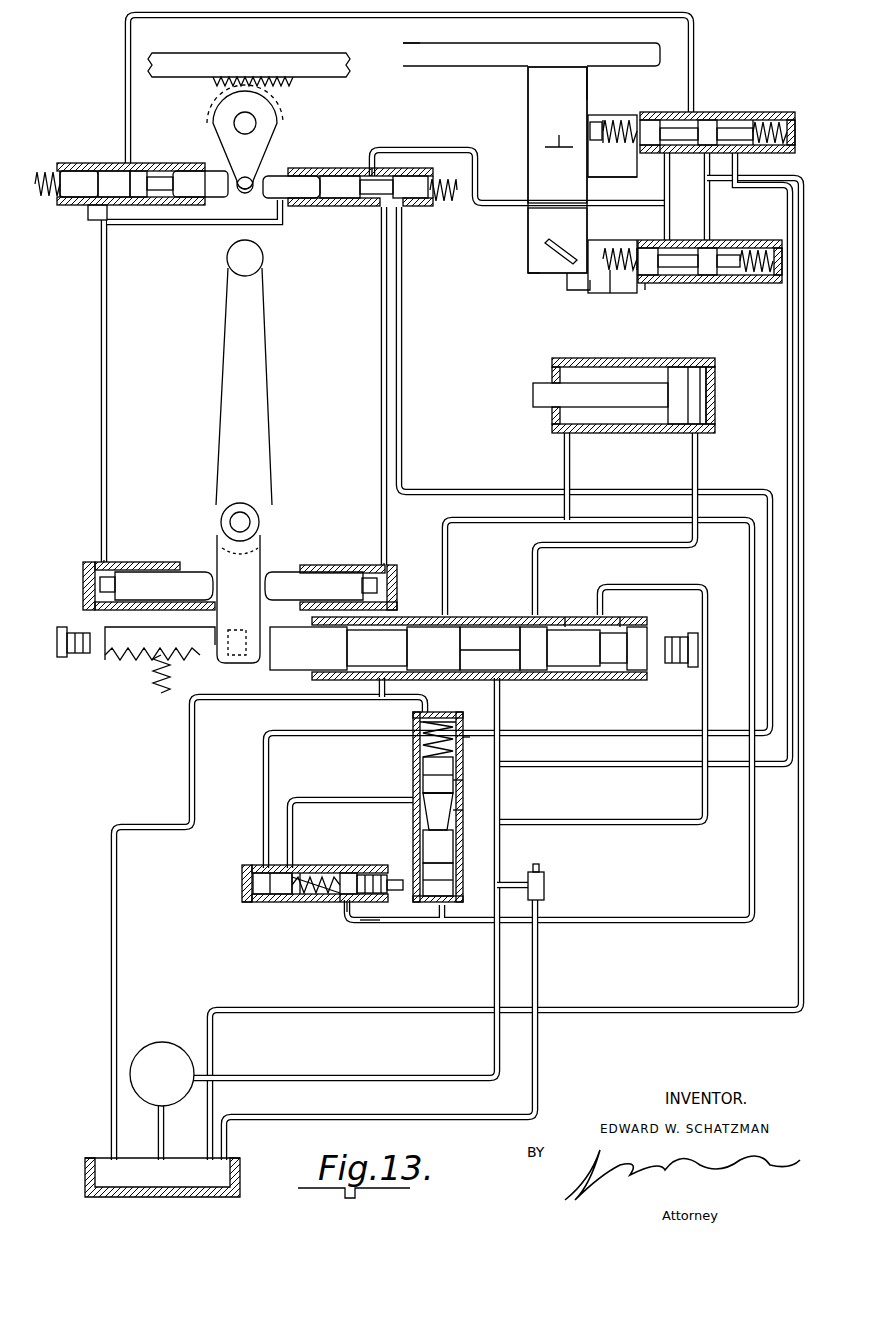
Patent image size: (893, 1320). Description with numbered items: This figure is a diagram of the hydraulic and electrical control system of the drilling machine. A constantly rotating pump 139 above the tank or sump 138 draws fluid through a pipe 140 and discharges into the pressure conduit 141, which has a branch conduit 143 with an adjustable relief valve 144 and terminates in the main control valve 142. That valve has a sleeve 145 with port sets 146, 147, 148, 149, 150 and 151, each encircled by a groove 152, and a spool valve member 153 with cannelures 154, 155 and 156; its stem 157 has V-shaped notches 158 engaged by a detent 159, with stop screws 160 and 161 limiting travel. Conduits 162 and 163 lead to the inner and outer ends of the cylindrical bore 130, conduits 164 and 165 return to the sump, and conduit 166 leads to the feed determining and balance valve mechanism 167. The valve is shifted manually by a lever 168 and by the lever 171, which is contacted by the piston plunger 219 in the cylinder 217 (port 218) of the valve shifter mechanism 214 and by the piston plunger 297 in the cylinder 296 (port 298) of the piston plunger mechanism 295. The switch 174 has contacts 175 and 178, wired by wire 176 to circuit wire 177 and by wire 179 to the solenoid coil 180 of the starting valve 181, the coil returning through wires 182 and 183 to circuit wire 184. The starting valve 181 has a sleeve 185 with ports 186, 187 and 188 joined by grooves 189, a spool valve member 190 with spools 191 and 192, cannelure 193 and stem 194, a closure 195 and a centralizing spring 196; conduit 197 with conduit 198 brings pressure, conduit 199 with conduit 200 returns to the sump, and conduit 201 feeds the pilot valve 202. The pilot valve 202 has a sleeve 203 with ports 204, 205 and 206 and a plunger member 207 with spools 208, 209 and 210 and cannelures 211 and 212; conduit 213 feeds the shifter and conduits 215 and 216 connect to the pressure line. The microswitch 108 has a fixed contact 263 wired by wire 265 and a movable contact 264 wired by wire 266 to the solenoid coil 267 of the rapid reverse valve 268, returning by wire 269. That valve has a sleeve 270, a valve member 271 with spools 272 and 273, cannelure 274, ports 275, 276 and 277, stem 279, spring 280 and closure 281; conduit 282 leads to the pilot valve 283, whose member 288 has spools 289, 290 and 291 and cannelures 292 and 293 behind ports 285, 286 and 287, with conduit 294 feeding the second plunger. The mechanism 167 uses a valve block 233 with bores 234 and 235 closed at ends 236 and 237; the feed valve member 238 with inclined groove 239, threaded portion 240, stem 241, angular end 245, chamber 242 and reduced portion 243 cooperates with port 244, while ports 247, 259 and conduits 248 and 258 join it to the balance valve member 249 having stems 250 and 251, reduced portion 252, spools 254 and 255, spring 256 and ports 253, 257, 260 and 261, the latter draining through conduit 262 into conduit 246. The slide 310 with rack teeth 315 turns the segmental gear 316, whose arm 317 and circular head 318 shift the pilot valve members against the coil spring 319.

The micro-electric switch 108 is at (527, 290).
The cylindrical bore 130 is at (668, 360).
The tank or sump 138 is at (85, 1180).
The pressure circulating pump 139 is at (178, 1050).
The pipe 140 is at (158, 1136).
The pressure pipe or conduit 141 is at (325, 1058).
The main control mechanism or valve 142 is at (484, 657).
The branch pipe or conduit 143 is at (514, 884).
The adjustable relief valve 144 is at (544, 888).
The valve sleeve 145 is at (630, 622).
The radial ports 146 is at (394, 664).
The radial ports 147 is at (428, 628).
The radial ports 148 is at (455, 636).
The radial ports 149 is at (508, 640).
The radial ports 150 is at (536, 628).
The radial ports 151 is at (605, 658).
The groove 152 is at (570, 624).
The spool type valve member 153 is at (628, 640).
The reduced portion or cannelure 154 is at (347, 652).
The reduced portion or cannelure 155 is at (515, 628).
The reduced portion or cannelure 156 is at (628, 648).
The stem 157 is at (106, 660).
The V-shaped notches 158 is at (132, 660).
The spring pressed detent 159 is at (170, 664).
The stop screw 160 is at (62, 658).
The stop screw 161 is at (690, 663).
The pipe or conduit 162 is at (449, 560).
The pipe or conduit 163 is at (539, 568).
The pipe or conduit 164 is at (340, 698).
The pipe or conduit 165 is at (572, 684).
The pipe or conduit 166 is at (640, 588).
The feed determining and balance valve mechanism 167 is at (229, 920).
The lever 168 is at (258, 450).
The lever 171 is at (262, 548).
The switch 174 is at (573, 112).
The contact 175 is at (558, 152).
The electrical conductor or wire 176 is at (528, 114).
The wire 177 is at (435, 85).
The contact 178 is at (585, 178).
The wire 179 is at (600, 150).
The solenoid coil 180 is at (618, 120).
The hydraulic valve 181 is at (728, 106).
The wire 182 is at (598, 180).
The wire 183 is at (585, 96).
The wire 184 is at (481, 56).
The enclosing sleeve 185 is at (760, 118).
The ports 186 is at (708, 122).
The ports 187 is at (695, 112).
The ports 188 is at (655, 118).
The groove 189 is at (718, 115).
The spool type valve member 190 is at (772, 150).
The spool 191 is at (656, 118).
The spool 192 is at (725, 152).
The reduced portion or cannelure 193 is at (654, 152).
The stem 194 is at (606, 125).
The closure 195 is at (775, 125).
The compressible coil spring 196 is at (790, 118).
The pipe or conduit 197 is at (711, 200).
The pipe or conduit 198 is at (788, 352).
The pipe or conduit 199 is at (684, 196).
The pipe or conduit 200 is at (798, 398).
The pipe or conduit 201 is at (692, 62).
The pilot valve mechanism 202 is at (138, 170).
The valve sleeve 203 is at (195, 165).
The ports 204 is at (140, 166).
The ports 205 is at (110, 208).
The ports 206 is at (82, 218).
The spool type valve and plunger member 207 is at (236, 195).
The spool portion 208 is at (82, 168).
The spool portion 209 is at (150, 170).
The spool portion 210 is at (182, 206).
The reduced portion or cannelure 211 is at (112, 166).
The reduced portion or cannelure 212 is at (178, 185).
The pipe or conduit 213 is at (108, 327).
The valve shifter mechanism 214 is at (34, 519).
The pipe or conduit 215 is at (312, 228).
The pipe or conduit 216 is at (402, 378).
The cylinder 217 is at (133, 565).
The port 218 is at (95, 562).
The piston plunger 219 is at (185, 580).
The valve block 233 is at (260, 903).
The bore 234 is at (276, 895).
The bore 235 is at (458, 780).
The closed end 236 is at (310, 885).
The closed end 237 is at (427, 801).
The valve member 238 is at (318, 870).
The inclined groove 239 is at (308, 903).
The enlarged threaded portion 240 is at (350, 870).
The valve stem 241 is at (380, 874).
The chamber 242 is at (330, 870).
The reduced portion 243 is at (338, 905).
The port 244 is at (350, 918).
The end of angular cross-section 245 is at (400, 892).
The pipe or conduit 246 is at (474, 924).
The second port 247 is at (308, 870).
The pipe or conduit 248 is at (338, 800).
The valve member 249 is at (466, 760).
The reduced stem portion 250 is at (452, 880).
The reduced stem portion 251 is at (422, 760).
The reduced portion 252 is at (438, 840).
The port 253 is at (460, 815).
The spool portion 254 is at (428, 820).
The spool portion 255 is at (422, 772).
The spring 256 is at (420, 722).
The port 257 is at (418, 724).
The pipe or conduit 258 is at (295, 730).
The port 259 is at (250, 866).
The port 260 is at (420, 792).
The port 261 is at (452, 890).
The pipe or conduit 262 is at (380, 922).
The fixed contact 263 is at (560, 285).
The movable contact 264 is at (570, 250).
The wire 265 is at (530, 233).
The wire 266 is at (594, 293).
The solenoid coil 267 is at (608, 250).
The rapid reverse valve 268 is at (715, 267).
The wire 269 is at (647, 290).
The valve sleeve 270 is at (757, 286).
The valve member 271 is at (712, 284).
The spool portion 272 is at (660, 285).
The spool portion 273 is at (742, 240).
The reduced portion or cannelure 274 is at (688, 262).
The ports 275 is at (710, 248).
The ports 276 is at (672, 284).
The ports 277 is at (630, 250).
The stem portion 279 is at (612, 290).
The spring 280 is at (756, 250).
The valve sleeve closure member 281 is at (778, 280).
The pipe or conduit 282 is at (502, 200).
The pilot valve 283 is at (367, 186).
The ports 285 is at (388, 118).
The ports 286 is at (372, 208).
The ports 287 is at (425, 210).
The spool type valve and plunger member 288 is at (310, 210).
The spool portion 289 is at (330, 168).
The spool portion 290 is at (355, 200).
The spool portion 291 is at (428, 208).
The reduced portion or cannelure 292 is at (350, 174).
The reduced portion or cannelure 293 is at (388, 190).
The pipe or conduit 294 is at (382, 368).
The piston plunger mechanism 295 is at (368, 524).
The sleeve or cylinder 296 is at (345, 572).
The piston plunger 297 is at (300, 574).
The port 298 is at (345, 572).
The slide 310 is at (346, 58).
The rack teeth 315 is at (345, 92).
The segmental gear 316 is at (215, 100).
The arm 317 is at (280, 118).
The circular head 318 is at (258, 172).
The coil spring 319 is at (42, 200).